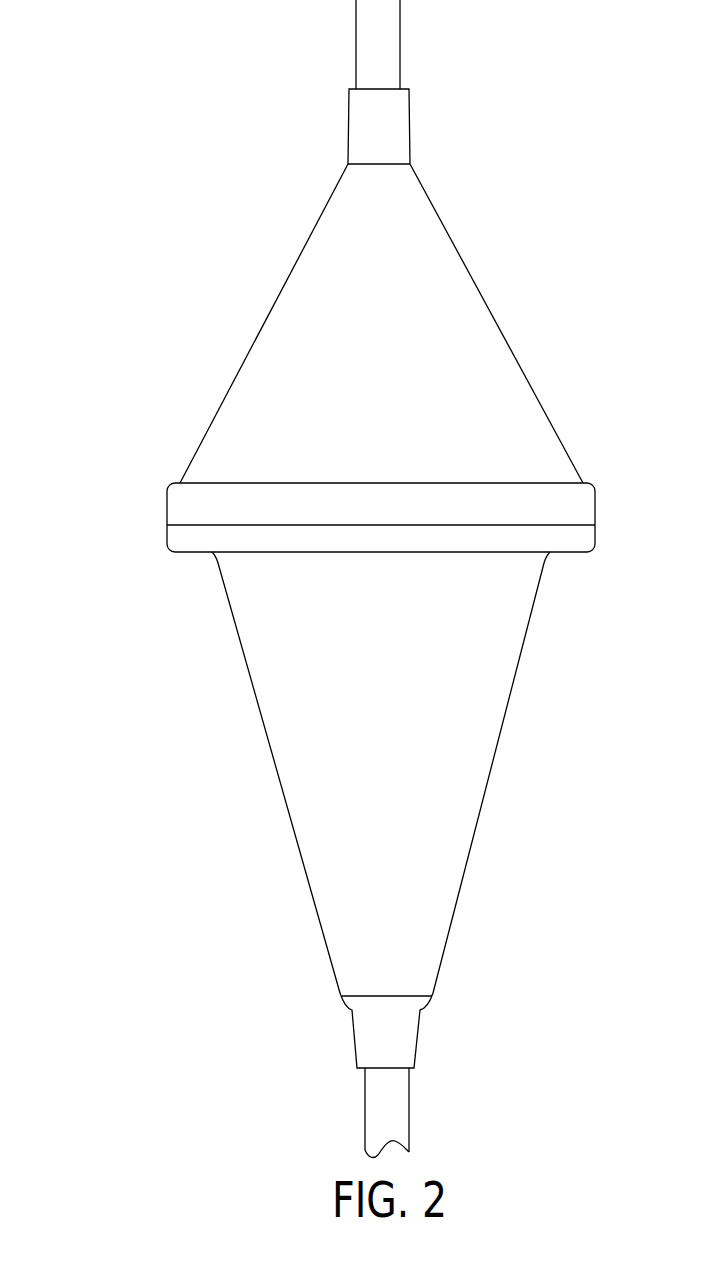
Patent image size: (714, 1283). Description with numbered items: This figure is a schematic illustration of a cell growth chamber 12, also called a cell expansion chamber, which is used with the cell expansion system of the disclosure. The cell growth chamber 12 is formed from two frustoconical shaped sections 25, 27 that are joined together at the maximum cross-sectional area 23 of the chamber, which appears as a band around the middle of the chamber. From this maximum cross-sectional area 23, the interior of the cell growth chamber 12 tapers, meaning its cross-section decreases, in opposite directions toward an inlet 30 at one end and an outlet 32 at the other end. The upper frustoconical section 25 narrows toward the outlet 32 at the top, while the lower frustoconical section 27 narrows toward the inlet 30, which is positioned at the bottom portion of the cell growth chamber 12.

The cell growth chamber 12 is at (118, 286).
The maximum cross-sectional area 23 is at (597, 538).
The frustoconical shaped section 25 is at (498, 323).
The frustoconical shaped section 27 is at (492, 772).
The inlet 30 is at (418, 1040).
The outlet 32 is at (410, 125).